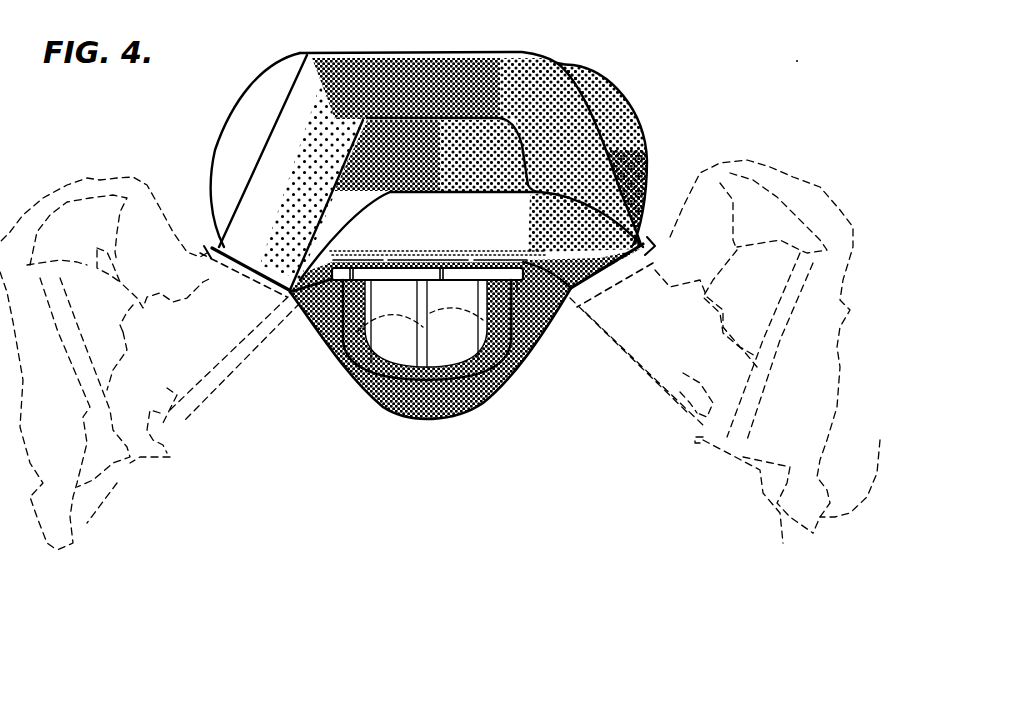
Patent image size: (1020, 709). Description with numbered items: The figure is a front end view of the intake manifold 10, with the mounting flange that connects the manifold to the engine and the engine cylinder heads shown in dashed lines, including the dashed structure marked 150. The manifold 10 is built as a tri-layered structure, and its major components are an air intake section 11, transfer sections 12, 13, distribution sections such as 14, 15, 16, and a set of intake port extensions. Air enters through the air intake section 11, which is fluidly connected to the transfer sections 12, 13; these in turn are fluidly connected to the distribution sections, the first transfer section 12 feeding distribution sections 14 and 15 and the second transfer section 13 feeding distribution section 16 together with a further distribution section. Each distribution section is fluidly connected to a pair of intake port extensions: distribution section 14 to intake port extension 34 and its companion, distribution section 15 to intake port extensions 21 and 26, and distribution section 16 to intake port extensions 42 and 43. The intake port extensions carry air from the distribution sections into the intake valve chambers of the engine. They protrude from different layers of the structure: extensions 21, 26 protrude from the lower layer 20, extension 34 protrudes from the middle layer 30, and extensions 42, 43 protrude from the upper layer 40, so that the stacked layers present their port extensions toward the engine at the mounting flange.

The manifold 10 is at (442, 249).
The air intake section 11 is at (407, 360).
The transfer section 12 is at (523, 320).
The transfer section 13 is at (233, 117).
The distribution section 14 is at (620, 103).
The distribution section 15 is at (517, 195).
The distribution section 16 is at (457, 77).
The lower layer 20 is at (467, 243).
The intake port extension 21 is at (588, 252).
The intake port extension 26 is at (289, 295).
The middle layer 30 is at (407, 157).
The intake port extension 34 is at (337, 212).
The upper layer 40 is at (388, 77).
The intake port extension 42 is at (263, 257).
The intake port extension 43 is at (583, 167).
The pelvis (phantom) 150 is at (444, 355).